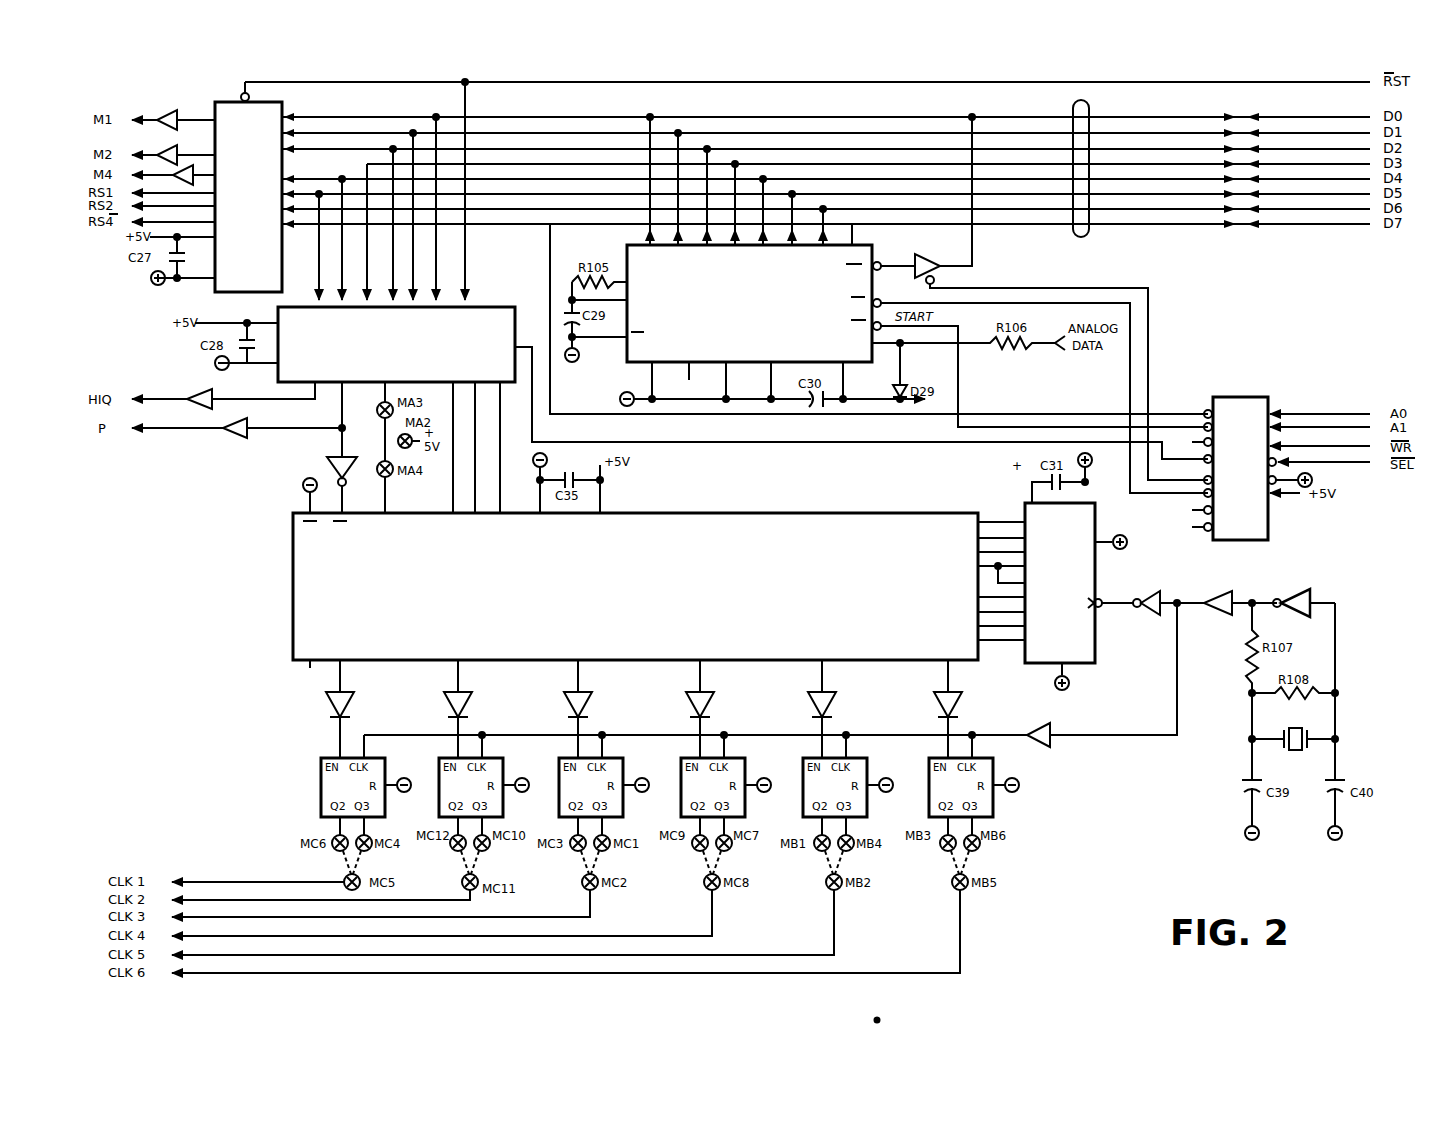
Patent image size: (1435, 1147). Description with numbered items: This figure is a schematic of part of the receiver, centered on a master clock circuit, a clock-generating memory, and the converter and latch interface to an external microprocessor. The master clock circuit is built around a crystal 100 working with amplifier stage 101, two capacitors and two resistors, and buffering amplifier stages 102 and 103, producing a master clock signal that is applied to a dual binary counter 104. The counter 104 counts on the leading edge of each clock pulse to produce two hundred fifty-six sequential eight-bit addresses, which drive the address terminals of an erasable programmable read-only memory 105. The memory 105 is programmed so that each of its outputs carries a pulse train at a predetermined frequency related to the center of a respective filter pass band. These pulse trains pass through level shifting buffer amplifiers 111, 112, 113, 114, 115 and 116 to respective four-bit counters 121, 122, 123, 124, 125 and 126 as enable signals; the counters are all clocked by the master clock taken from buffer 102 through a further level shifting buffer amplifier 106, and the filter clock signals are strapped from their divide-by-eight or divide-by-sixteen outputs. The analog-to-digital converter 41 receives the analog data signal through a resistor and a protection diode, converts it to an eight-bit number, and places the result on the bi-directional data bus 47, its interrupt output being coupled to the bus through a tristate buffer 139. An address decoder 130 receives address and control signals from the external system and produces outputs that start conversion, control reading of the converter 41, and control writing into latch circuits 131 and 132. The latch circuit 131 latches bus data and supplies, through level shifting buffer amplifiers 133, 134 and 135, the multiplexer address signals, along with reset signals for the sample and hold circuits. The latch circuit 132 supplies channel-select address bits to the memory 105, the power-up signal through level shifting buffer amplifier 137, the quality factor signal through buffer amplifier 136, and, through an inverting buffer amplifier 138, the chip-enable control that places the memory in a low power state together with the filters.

The analog-to-digital converter 41 is at (625, 250).
The data bus 47 is at (1085, 237).
The crystal 100 is at (1296, 750).
The amplifier stage 101 is at (1308, 588).
The buffering amplifier stage 102 is at (1232, 588).
The buffering amplifier stage 103 is at (1166, 578).
The dual binary counter 104 is at (1095, 640).
The erasable programmable read-only memory 105 is at (862, 513).
The level shifting buffer amplifier 106 is at (1040, 748).
The level shifting buffer amplifier 111 is at (350, 706).
The level shifting buffer amplifier 112 is at (470, 704).
The level shifting buffer amplifier 113 is at (590, 704).
The level shifting buffer amplifier 114 is at (712, 704).
The level shifting buffer amplifier 115 is at (834, 704).
The level shifting buffer amplifier 116 is at (960, 704).
The four-bit counter 121 is at (320, 787).
The four-bit counter 122 is at (437, 770).
The four-bit counter 123 is at (557, 770).
The four-bit counter 124 is at (679, 770).
The four-bit counter 125 is at (801, 770).
The four-bit counter 126 is at (927, 770).
The address decoder 130 is at (1268, 527).
The latch circuit 131 is at (285, 262).
The latch circuit 132 is at (487, 315).
The level shifting buffer amplifier 133 is at (172, 112).
The level shifting buffer amplifier 134 is at (172, 146).
The level shifting buffer amplifier 135 is at (180, 172).
The buffer amplifier 136 is at (198, 384).
The level shifting buffer amplifier 137 is at (232, 440).
The inverting buffer amplifier 138 is at (326, 465).
The tristate buffer 139 is at (935, 256).